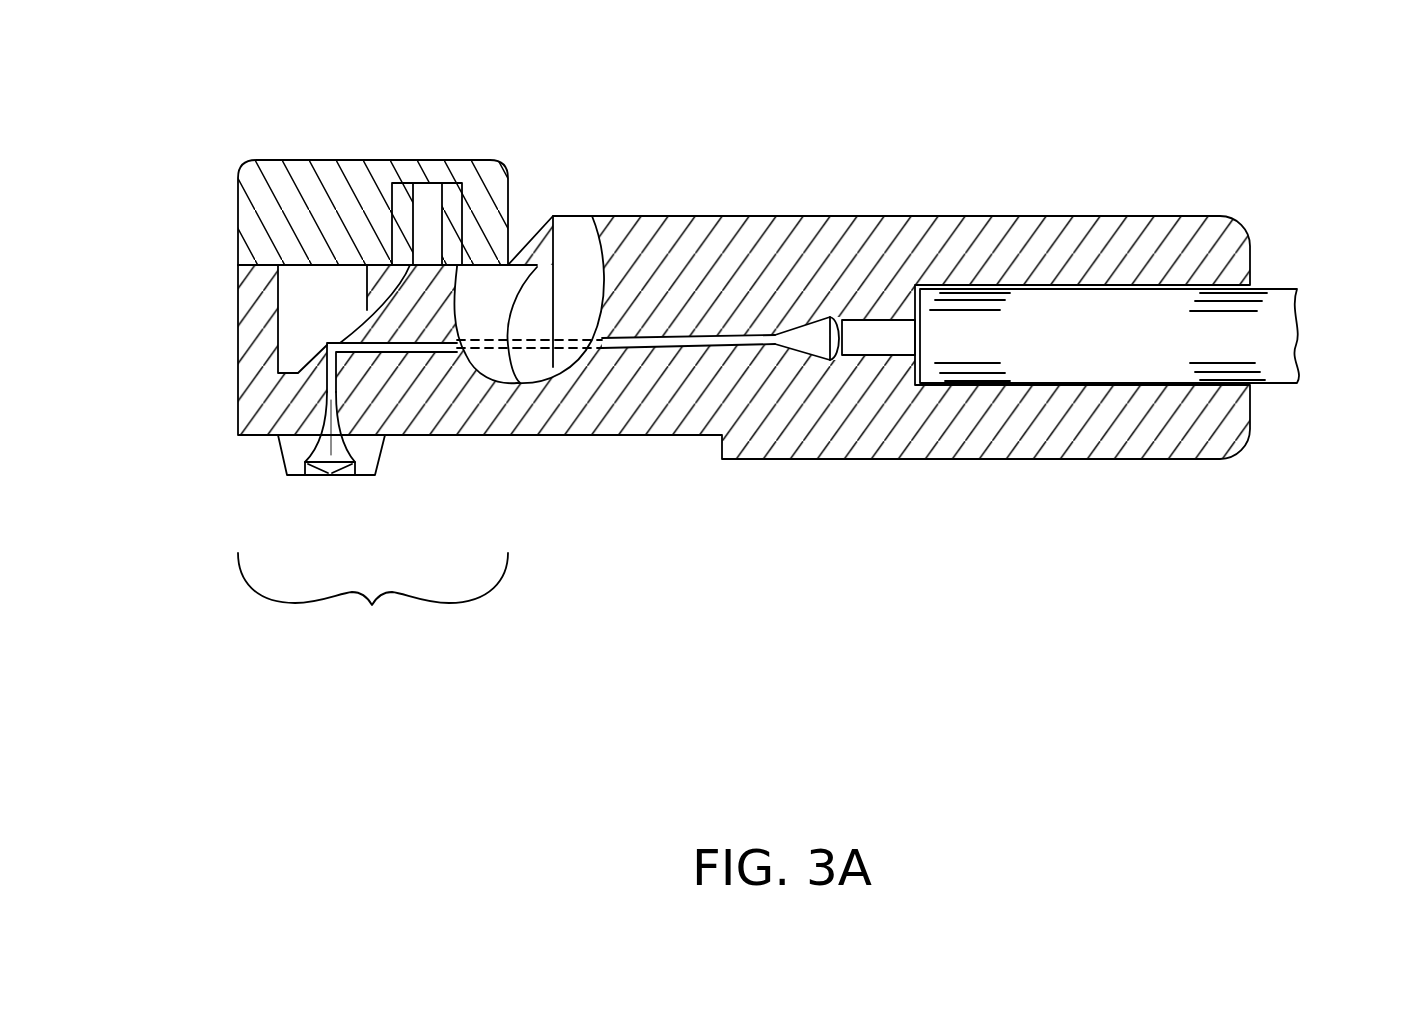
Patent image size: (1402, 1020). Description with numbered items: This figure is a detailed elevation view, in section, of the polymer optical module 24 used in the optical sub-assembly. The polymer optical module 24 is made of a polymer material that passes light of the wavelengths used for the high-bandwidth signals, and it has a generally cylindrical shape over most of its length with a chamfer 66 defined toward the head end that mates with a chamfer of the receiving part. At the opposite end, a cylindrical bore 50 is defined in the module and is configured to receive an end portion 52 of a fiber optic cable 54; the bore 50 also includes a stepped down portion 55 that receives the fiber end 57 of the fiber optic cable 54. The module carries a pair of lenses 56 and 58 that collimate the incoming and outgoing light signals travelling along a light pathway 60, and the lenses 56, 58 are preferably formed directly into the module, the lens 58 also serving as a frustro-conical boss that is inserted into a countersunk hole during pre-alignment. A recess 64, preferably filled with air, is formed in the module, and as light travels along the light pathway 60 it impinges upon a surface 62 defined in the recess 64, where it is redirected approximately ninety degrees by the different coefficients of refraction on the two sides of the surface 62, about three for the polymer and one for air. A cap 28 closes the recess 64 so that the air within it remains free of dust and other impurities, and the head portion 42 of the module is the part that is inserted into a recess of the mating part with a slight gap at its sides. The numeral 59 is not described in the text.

The polymer optical module 24 is at (1005, 558).
The cap 28 is at (282, 170).
The head portion 42 is at (441, 603).
The cylindrical bore 50 is at (1135, 386).
The end portion 52 is at (1073, 303).
The fiber optic cable 54 is at (1283, 354).
The stepped down portion 55 is at (893, 310).
The lens 56 is at (355, 476).
The fiber end 57 is at (877, 347).
The lens 58 is at (860, 318).
The nozzle 59 is at (287, 470).
The light pathway 60 is at (655, 330).
The surface 62 is at (410, 265).
The recess 64 is at (320, 317).
The chamfer 66 is at (540, 256).